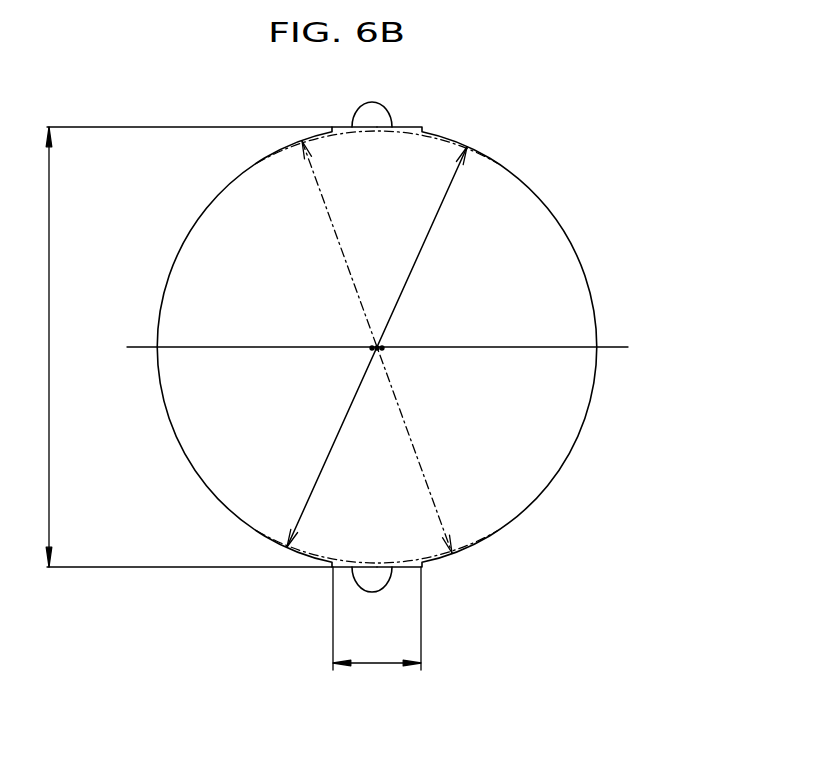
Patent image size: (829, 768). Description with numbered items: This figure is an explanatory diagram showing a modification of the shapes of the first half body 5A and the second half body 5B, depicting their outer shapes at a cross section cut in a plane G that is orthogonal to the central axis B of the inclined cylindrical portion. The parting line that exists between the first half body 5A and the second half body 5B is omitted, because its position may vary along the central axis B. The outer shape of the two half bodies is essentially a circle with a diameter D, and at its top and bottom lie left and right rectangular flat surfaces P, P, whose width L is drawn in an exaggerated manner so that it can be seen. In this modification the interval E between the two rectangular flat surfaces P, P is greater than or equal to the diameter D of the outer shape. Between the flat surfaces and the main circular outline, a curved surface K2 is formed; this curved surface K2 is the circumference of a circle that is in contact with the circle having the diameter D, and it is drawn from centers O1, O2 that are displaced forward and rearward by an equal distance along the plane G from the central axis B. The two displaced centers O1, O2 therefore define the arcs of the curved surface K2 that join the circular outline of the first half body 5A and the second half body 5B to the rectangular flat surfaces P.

The first half body 5A is at (232, 420).
The second half body 5B is at (523, 420).
The plane G is at (535, 288).
The curved surface K2 is at (257, 163).
The rectangular flat surface P is at (390, 128).
The diameter D is at (337, 242).
The central axis B is at (380, 346).
The center O1 is at (372, 350).
The center O2 is at (382, 350).
The interval E is at (179, 347).
The width L is at (377, 618).